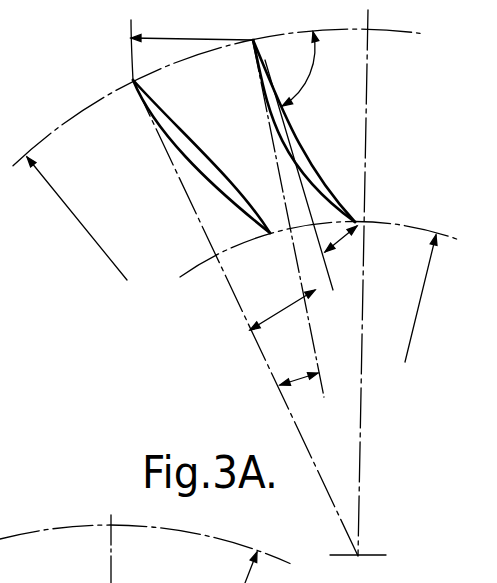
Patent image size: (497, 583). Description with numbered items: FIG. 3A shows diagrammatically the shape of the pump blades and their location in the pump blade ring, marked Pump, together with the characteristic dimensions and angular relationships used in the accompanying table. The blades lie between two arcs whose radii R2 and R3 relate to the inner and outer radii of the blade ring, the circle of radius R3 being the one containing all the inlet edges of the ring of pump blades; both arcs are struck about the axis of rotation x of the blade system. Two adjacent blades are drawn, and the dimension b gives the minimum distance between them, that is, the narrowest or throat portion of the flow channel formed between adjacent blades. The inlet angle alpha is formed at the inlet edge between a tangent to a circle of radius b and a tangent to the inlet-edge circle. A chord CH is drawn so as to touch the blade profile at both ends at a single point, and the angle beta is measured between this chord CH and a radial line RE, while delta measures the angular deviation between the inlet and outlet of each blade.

The axis of rotation x is at (360, 558).
The radial line RE is at (258, 345).
The radius R3 is at (83, 222).
The radius R2 is at (428, 272).
The chord CH is at (207, 148).
The minimum distance between adjacent blades b is at (192, 27).
The pump Pump is at (458, 104).